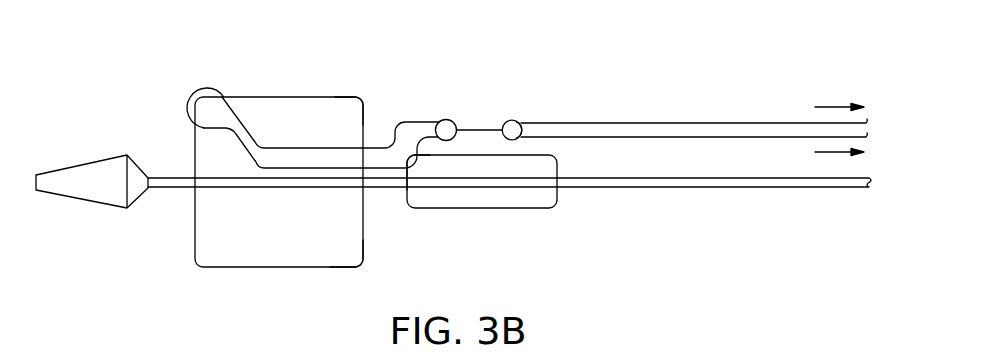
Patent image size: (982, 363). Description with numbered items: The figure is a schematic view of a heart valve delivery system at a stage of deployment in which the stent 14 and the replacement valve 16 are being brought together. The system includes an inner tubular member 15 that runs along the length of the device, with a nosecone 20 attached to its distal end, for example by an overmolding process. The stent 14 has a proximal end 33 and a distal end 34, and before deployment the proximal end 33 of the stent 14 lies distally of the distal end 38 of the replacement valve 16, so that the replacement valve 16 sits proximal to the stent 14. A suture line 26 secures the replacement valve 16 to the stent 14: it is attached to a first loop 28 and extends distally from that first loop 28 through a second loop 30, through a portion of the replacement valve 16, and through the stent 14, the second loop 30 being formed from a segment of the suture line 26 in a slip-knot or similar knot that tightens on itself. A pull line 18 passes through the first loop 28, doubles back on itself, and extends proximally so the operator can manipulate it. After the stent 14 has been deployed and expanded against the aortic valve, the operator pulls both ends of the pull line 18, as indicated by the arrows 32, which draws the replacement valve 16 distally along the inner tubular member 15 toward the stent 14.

The stent 14 is at (338, 268).
The inner tubular member 15 is at (712, 188).
The replacement valve 16 is at (532, 209).
The pull line 18 is at (662, 122).
The nosecone 20 is at (103, 160).
The suture line 26 is at (301, 147).
The first loop 28 is at (513, 120).
The second loop 30 is at (446, 120).
The arrows 32 is at (835, 107).
The proximal end 33 is at (360, 97).
The distal end 34 is at (197, 268).
The distal end 38 is at (410, 209).